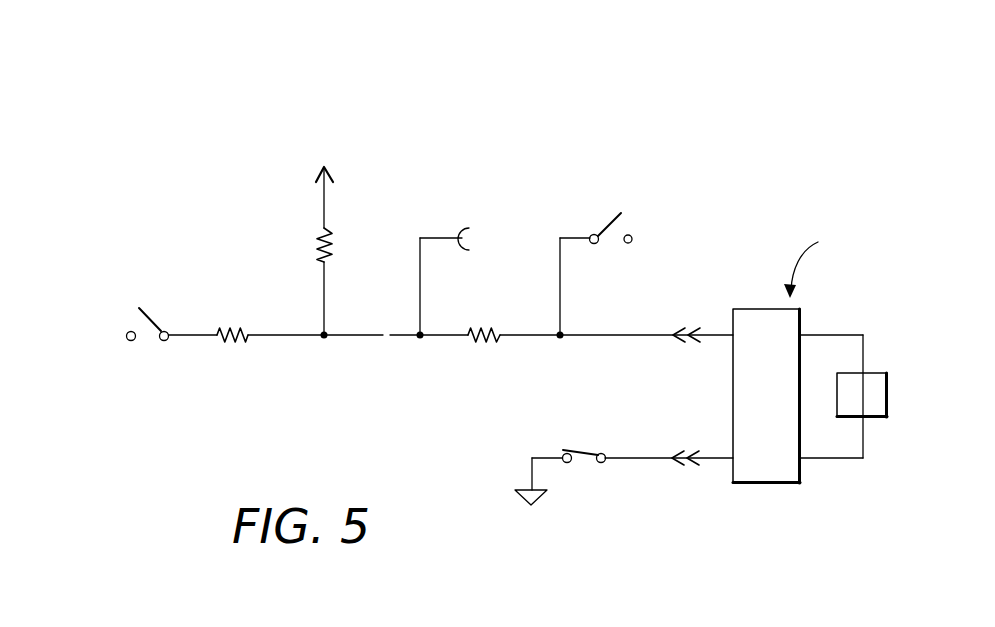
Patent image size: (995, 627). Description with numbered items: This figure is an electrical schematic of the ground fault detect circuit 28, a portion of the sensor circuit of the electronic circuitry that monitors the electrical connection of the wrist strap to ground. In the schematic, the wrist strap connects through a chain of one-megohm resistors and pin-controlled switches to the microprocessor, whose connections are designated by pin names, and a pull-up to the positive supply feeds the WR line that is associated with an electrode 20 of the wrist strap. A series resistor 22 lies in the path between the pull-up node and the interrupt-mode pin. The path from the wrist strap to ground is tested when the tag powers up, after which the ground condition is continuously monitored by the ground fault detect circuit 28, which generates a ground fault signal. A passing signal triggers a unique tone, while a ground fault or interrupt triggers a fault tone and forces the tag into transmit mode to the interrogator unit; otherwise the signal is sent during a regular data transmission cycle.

The ground fault detect circuit 28 is at (198, 182).
The electrode 20 is at (523, 238).
The 1 megohm resistor 22 is at (470, 343).